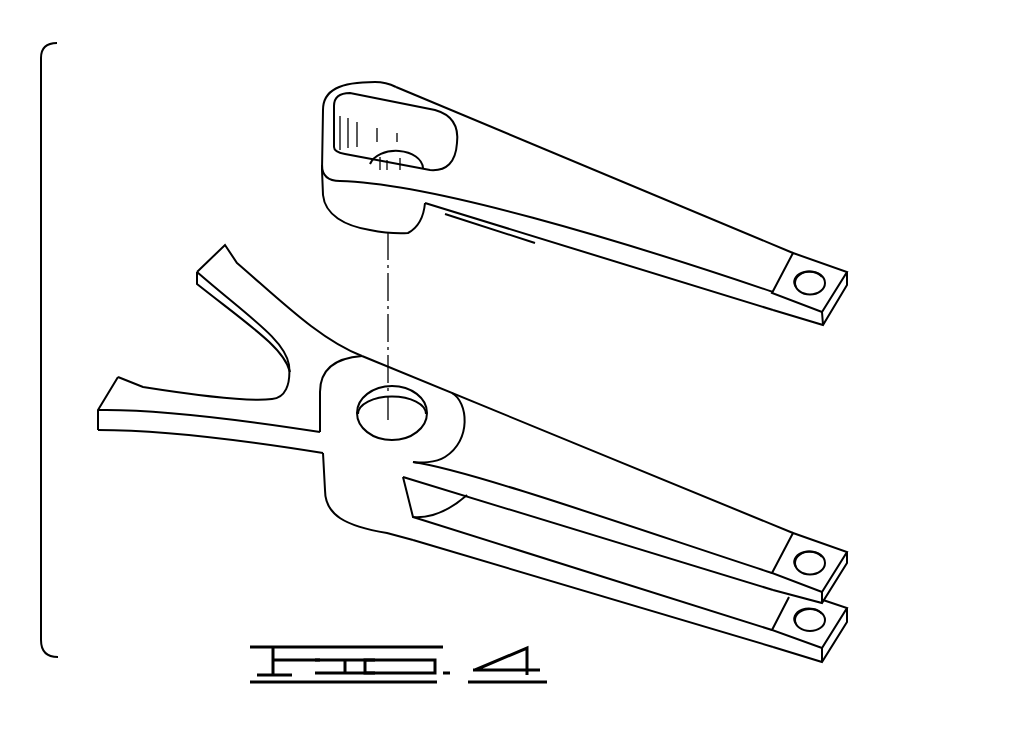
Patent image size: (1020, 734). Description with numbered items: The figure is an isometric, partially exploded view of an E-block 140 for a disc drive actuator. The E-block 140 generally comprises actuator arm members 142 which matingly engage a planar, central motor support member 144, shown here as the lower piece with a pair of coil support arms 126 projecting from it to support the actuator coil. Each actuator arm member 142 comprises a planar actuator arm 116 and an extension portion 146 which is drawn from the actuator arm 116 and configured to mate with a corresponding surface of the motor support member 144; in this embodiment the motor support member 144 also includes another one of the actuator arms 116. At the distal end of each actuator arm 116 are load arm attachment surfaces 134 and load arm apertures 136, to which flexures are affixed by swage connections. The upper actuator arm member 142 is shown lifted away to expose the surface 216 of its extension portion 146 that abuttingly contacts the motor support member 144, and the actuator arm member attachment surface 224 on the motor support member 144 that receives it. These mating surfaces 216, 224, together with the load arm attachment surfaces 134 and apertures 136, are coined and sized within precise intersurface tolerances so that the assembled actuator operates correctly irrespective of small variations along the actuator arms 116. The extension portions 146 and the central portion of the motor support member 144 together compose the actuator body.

The E-block 140 is at (280, 70).
The actuator arm member 142 is at (480, 138).
The actuator arm 116 is at (576, 187).
The load arm attachment surface 134 is at (830, 273).
The load arm aperture 136 is at (810, 280).
The extension portion 146 is at (336, 184).
The surface 216 is at (414, 250).
The coil support arm 126 is at (196, 286).
The actuator arm member attachment surface 224 is at (438, 398).
The motor support member 144 is at (282, 432).